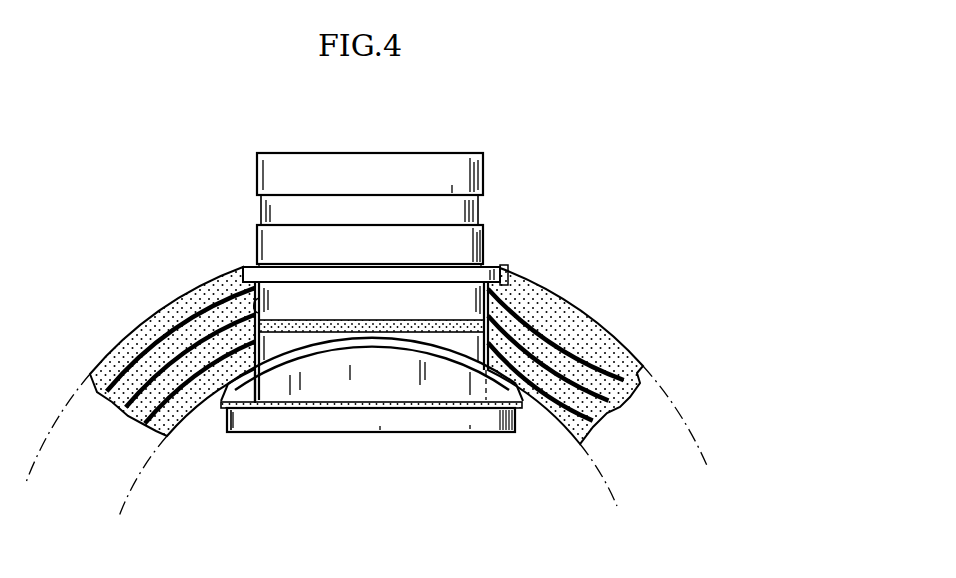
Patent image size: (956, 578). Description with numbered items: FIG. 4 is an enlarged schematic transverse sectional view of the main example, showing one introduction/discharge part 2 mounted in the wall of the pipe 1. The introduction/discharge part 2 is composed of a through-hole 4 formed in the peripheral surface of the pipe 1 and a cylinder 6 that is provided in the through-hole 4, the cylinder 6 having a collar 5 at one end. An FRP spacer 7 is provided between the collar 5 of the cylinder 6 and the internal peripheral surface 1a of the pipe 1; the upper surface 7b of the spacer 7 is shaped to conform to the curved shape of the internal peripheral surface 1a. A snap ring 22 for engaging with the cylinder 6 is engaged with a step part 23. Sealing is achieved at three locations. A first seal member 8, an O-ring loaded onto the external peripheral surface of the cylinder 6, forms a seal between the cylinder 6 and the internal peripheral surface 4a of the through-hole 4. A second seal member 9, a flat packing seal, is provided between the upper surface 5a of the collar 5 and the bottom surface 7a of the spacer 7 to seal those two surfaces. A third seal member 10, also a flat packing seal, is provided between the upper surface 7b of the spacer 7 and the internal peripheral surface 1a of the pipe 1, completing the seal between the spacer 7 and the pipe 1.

The pipe 1 is at (647, 353).
The internal peripheral surface 1a is at (176, 432).
The introduction/discharge part 2 is at (419, 188).
The through-hole 4 is at (404, 309).
The internal peripheral surface of the through-hole 4a is at (261, 303).
The collar 5 is at (223, 437).
The upper surface of the collar 5a is at (163, 312).
The cylinder 6 is at (468, 243).
The FRP spacer 7 is at (332, 388).
The bottom surface of the spacer 7a is at (284, 404).
The upper surface of the spacer 7b is at (256, 380).
The first seal member 8 is at (396, 328).
The second seal member 9 is at (494, 413).
The third seal member 10 is at (449, 363).
The snap ring 22 is at (492, 263).
The step part 23 is at (499, 270).